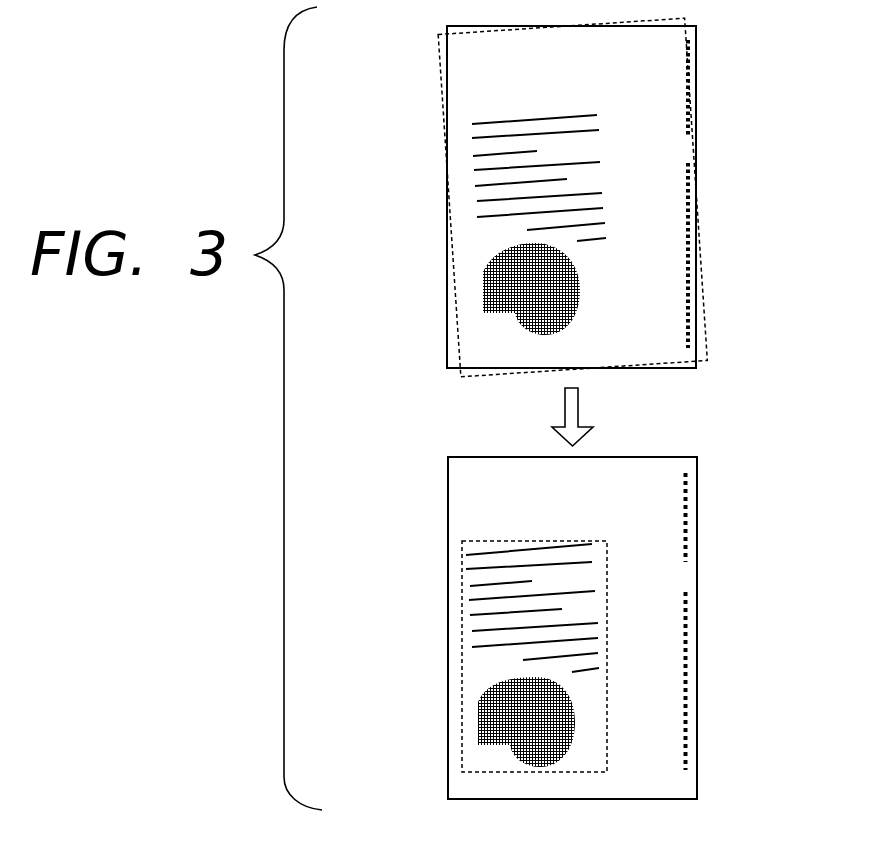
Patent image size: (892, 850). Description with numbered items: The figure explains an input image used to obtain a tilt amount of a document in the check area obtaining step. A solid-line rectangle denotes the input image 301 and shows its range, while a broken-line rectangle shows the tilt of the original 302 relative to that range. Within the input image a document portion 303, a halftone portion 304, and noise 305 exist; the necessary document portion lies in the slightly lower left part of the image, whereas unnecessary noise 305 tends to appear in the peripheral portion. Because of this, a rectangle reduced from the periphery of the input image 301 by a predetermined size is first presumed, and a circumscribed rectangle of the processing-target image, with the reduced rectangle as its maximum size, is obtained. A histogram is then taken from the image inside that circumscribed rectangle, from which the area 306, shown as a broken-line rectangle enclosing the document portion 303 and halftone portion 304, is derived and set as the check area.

The input image 301 is at (695, 73).
The tilt of the original 302 is at (705, 298).
The document portion 303 is at (487, 122).
The halftone portion 304 is at (487, 267).
The noise 305 is at (685, 522).
The check area 306 is at (462, 565).